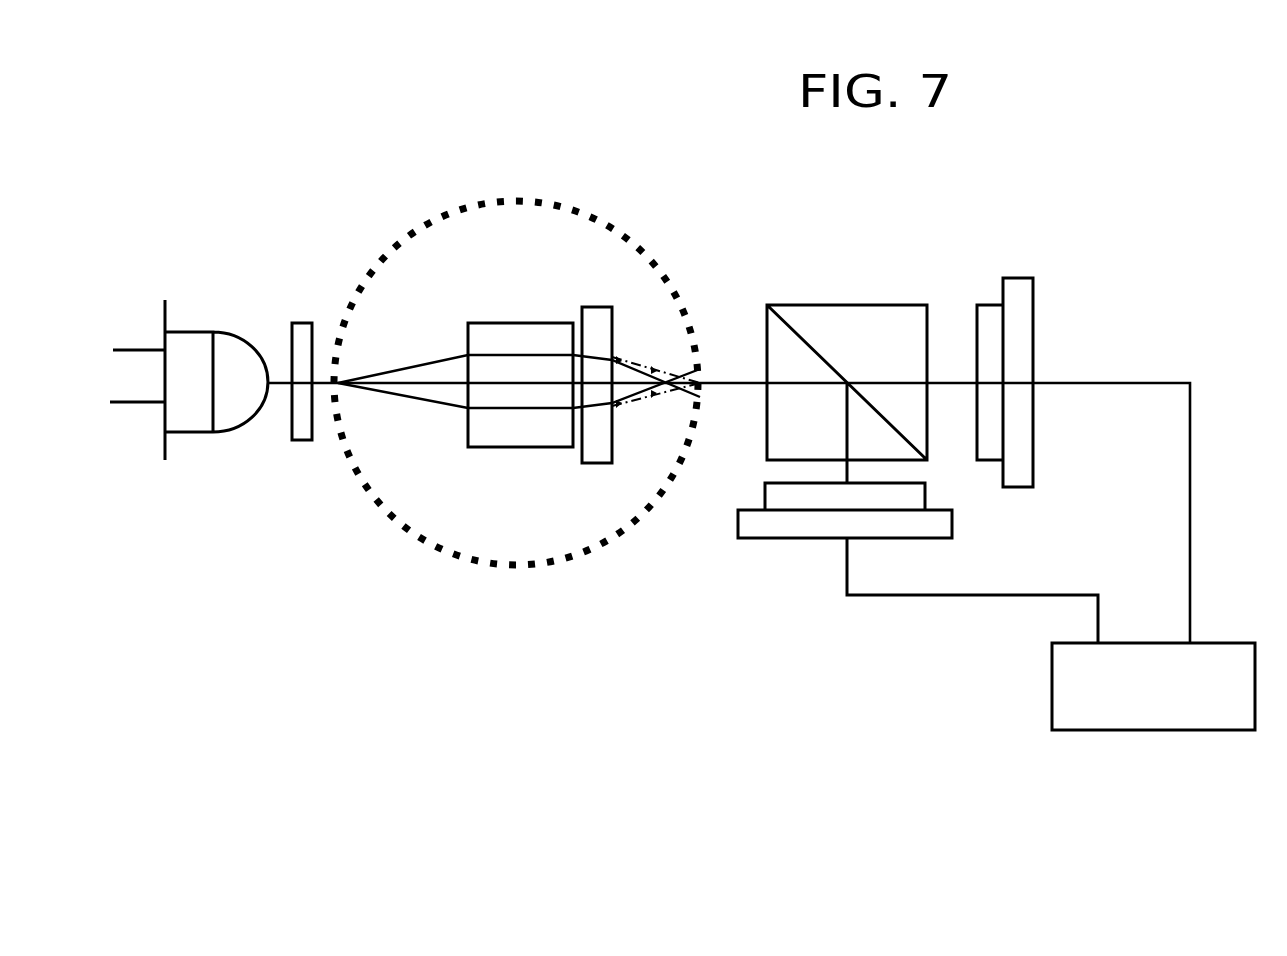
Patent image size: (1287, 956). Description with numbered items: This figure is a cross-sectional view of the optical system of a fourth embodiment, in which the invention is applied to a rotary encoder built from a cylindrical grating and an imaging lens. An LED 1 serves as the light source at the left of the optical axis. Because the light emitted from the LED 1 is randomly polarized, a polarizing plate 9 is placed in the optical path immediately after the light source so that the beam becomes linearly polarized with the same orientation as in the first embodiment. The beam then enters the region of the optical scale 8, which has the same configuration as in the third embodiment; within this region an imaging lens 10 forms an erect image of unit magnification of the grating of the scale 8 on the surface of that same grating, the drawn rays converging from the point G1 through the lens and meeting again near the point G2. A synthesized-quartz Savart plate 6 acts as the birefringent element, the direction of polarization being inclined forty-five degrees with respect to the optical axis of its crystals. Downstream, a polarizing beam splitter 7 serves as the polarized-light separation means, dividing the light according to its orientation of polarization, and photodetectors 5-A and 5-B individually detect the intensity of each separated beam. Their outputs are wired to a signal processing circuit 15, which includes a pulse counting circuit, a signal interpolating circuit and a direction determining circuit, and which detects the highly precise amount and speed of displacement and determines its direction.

The LED 1 is at (193, 342).
The polarizing plate 9 is at (300, 323).
The optical scale 8 is at (492, 200).
The imaging lens 10 is at (503, 323).
The Savart plate 6 is at (597, 307).
The polarizing beam splitter 7 is at (855, 320).
The photodetector 5-A is at (1023, 313).
The photodetector 5-B is at (771, 528).
The signal processing circuit 15 is at (1052, 683).
The first focal point G1 is at (519, 376).
The second focal point G2 is at (656, 371).